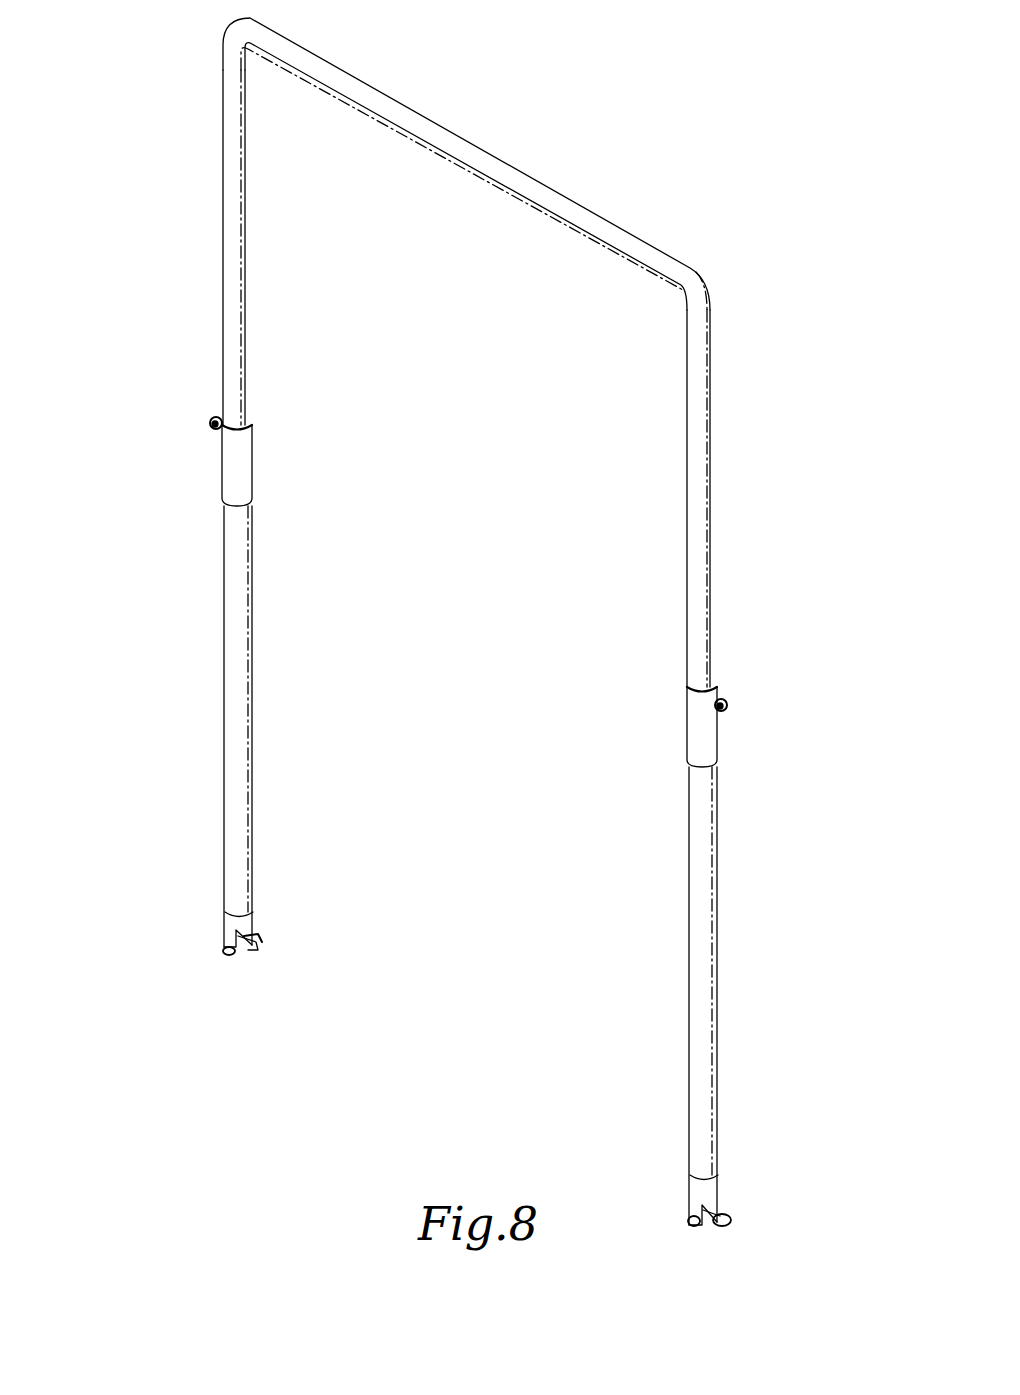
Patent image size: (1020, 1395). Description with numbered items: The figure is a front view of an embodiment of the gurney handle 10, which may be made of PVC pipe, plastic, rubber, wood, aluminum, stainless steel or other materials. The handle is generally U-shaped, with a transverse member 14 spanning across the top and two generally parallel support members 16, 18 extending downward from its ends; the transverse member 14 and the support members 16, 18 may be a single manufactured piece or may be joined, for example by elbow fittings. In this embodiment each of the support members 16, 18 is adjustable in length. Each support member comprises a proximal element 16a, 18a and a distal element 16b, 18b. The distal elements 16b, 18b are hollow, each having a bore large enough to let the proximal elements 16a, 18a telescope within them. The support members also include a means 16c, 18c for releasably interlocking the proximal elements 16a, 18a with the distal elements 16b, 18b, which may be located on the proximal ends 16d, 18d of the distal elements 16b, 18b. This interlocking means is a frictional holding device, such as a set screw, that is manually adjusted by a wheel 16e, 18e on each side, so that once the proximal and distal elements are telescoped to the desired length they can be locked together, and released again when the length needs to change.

The gurney handle 10 is at (165, 136).
The transverse member 14 is at (450, 124).
The support member 16 is at (93, 178).
The proximal element 16a is at (223, 313).
The distal element 16b is at (223, 530).
The means for releasably interlocking 16c is at (197, 392).
The proximal end 16d is at (253, 450).
The wheel 16e is at (215, 412).
The support member 18 is at (850, 455).
The proximal element 18a is at (716, 569).
The distal element 18b is at (714, 790).
The means for releasably interlocking 18c is at (737, 672).
The proximal end 18d is at (687, 710).
The wheel 18e is at (721, 698).